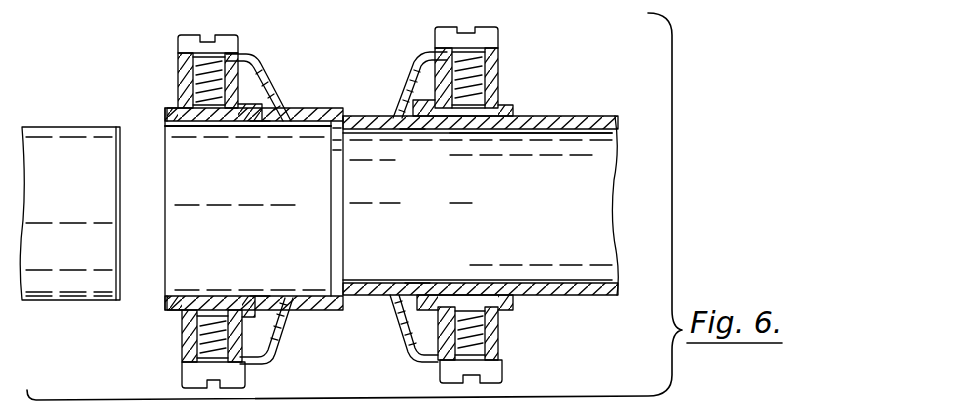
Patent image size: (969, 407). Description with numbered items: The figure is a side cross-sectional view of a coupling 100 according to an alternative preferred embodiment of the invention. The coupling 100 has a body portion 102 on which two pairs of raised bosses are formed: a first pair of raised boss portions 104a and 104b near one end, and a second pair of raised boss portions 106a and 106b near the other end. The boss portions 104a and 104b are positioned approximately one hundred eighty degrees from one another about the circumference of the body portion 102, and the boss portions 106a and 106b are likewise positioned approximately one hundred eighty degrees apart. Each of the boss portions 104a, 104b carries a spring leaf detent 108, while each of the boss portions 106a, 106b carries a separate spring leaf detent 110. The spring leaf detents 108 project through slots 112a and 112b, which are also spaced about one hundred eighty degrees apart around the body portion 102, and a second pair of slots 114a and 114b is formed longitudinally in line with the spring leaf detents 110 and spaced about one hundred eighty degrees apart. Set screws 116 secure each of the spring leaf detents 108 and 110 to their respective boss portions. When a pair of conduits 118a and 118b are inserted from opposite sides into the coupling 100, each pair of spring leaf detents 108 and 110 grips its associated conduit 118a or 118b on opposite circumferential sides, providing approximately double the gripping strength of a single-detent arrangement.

The coupling 100 is at (566, 98).
The body portion 102 is at (321, 105).
The raised boss portion 104a is at (173, 73).
The raised boss portion 104b is at (169, 348).
The raised boss portion 106a is at (512, 71).
The raised boss portion 106b is at (521, 338).
The spring leaf detent 108 is at (270, 86).
The spring leaf detent 110 is at (402, 80).
The slot 112a is at (259, 123).
The slot 112b is at (260, 296).
The slot 114a is at (413, 129).
The slot 114b is at (421, 300).
The set screw 116 is at (177, 43).
The conduit 118a is at (50, 127).
The conduit 118b is at (552, 134).